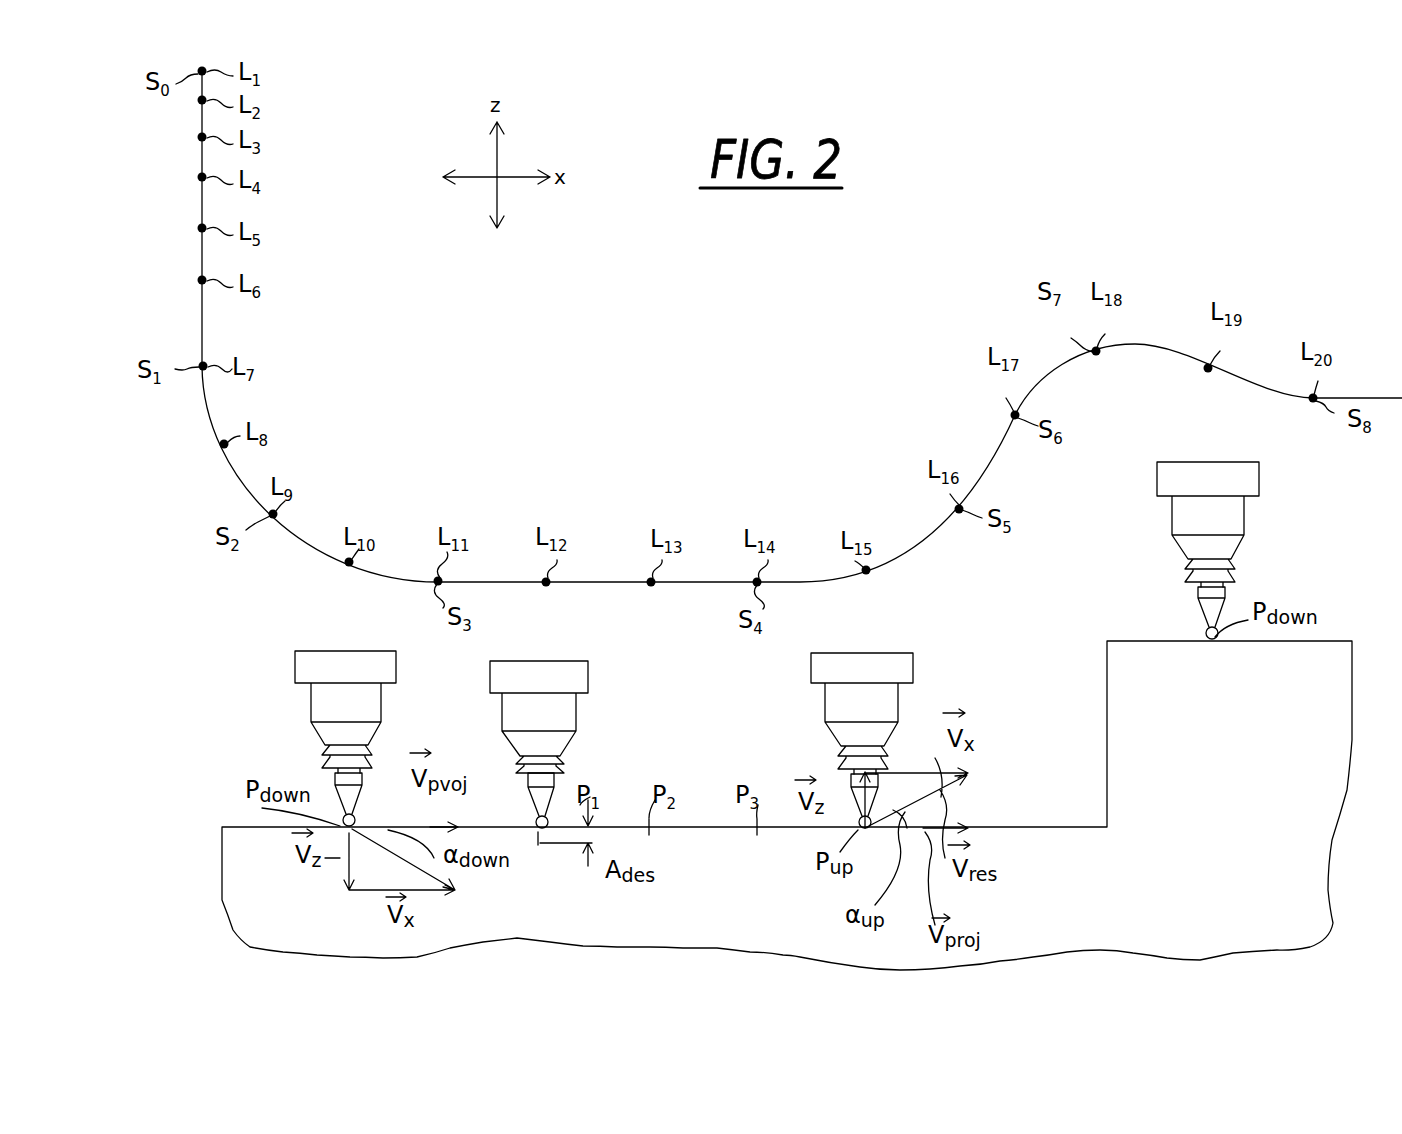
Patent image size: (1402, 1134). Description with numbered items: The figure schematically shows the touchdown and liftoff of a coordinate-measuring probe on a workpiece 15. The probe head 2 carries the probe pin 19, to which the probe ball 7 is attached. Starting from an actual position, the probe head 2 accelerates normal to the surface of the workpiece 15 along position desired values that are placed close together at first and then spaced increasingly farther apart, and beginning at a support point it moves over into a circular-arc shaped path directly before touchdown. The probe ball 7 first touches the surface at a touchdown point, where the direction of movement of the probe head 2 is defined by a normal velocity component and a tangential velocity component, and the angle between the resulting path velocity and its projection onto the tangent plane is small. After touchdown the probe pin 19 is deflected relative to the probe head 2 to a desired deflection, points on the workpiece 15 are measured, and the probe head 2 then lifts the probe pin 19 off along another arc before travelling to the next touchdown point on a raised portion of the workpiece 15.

The probe head 2 is at (1245, 478).
The probe pin 19 is at (1200, 614).
The probe ball 7 is at (1206, 634).
The workpiece 15 is at (1330, 787).